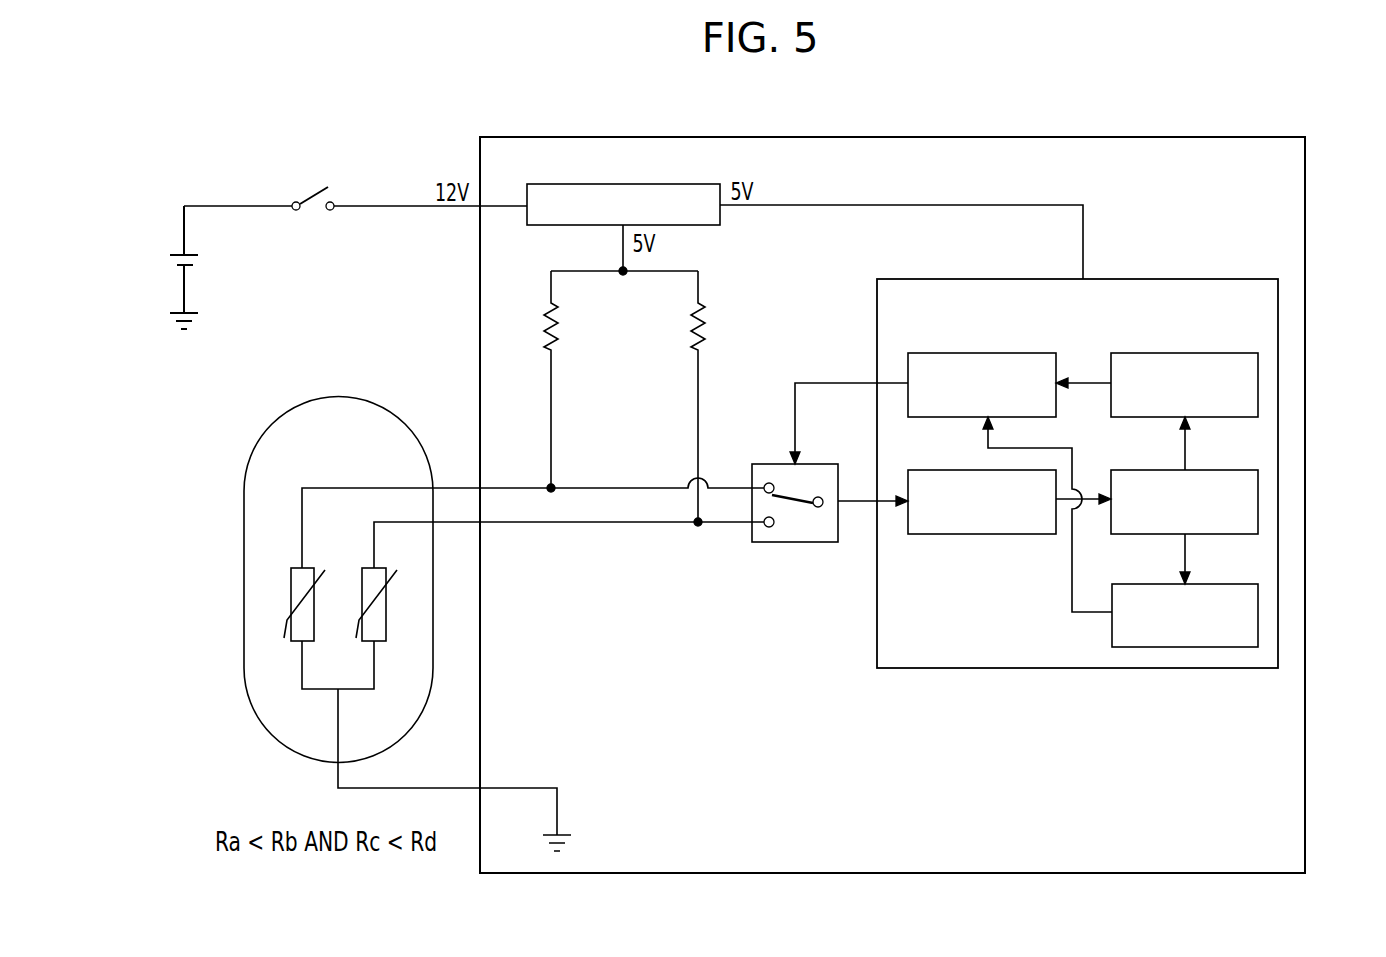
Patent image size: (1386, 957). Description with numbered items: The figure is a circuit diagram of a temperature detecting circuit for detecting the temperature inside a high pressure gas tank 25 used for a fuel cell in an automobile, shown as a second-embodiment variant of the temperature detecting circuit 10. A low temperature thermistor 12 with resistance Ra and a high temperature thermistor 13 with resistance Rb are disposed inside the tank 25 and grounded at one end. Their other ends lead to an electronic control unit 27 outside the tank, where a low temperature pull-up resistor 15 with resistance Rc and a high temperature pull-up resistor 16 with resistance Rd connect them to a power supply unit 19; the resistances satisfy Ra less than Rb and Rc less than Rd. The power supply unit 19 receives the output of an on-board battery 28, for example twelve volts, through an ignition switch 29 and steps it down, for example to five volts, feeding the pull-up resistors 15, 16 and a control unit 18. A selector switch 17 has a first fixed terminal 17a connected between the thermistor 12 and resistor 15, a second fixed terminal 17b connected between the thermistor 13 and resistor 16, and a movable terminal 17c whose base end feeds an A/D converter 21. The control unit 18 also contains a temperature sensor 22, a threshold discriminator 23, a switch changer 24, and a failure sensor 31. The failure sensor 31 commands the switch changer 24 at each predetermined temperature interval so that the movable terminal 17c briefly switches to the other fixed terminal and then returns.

The temperature detecting circuit 10 is at (414, 310).
The low temperature thermistor 12 is at (291, 580).
The high temperature thermistor 13 is at (386, 625).
The low temperature pull-up resistor 15 is at (551, 303).
The high temperature pull-up resistor 16 is at (698, 303).
The selector switch 17 is at (796, 507).
The first fixed terminal 17a is at (768, 482).
The second fixed terminal 17b is at (769, 528).
The movable terminal 17c is at (815, 508).
The control unit 18 is at (1230, 279).
The power supply unit 19 is at (623, 184).
The A/D converter 21 is at (925, 470).
The temperature sensor 22 is at (1218, 470).
The threshold discriminator 23 is at (1220, 353).
The switch changer 24 is at (930, 353).
The high pressure gas tank 25 is at (372, 400).
The electronic control unit 27 is at (503, 137).
The on-board battery 28 is at (193, 254).
The ignition switch 29 is at (316, 192).
The failure sensor 31 is at (1218, 584).